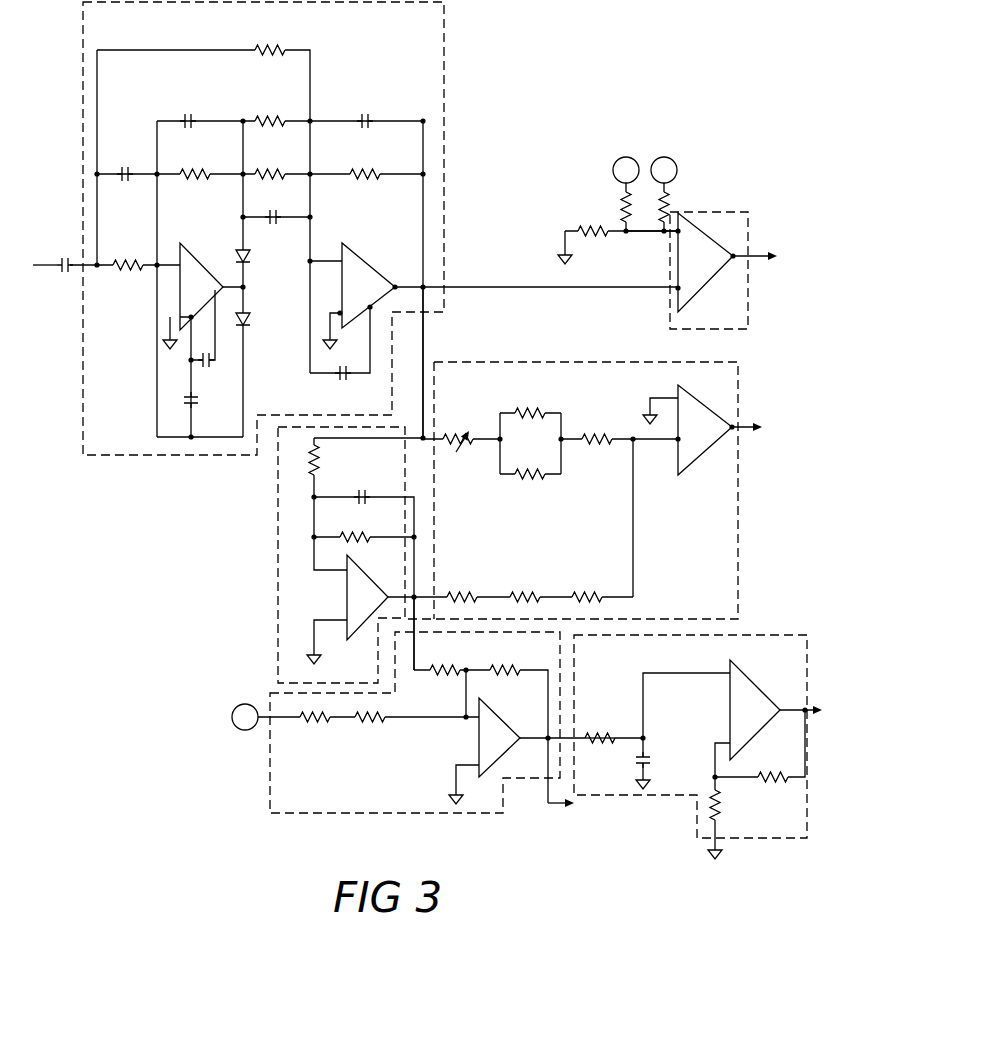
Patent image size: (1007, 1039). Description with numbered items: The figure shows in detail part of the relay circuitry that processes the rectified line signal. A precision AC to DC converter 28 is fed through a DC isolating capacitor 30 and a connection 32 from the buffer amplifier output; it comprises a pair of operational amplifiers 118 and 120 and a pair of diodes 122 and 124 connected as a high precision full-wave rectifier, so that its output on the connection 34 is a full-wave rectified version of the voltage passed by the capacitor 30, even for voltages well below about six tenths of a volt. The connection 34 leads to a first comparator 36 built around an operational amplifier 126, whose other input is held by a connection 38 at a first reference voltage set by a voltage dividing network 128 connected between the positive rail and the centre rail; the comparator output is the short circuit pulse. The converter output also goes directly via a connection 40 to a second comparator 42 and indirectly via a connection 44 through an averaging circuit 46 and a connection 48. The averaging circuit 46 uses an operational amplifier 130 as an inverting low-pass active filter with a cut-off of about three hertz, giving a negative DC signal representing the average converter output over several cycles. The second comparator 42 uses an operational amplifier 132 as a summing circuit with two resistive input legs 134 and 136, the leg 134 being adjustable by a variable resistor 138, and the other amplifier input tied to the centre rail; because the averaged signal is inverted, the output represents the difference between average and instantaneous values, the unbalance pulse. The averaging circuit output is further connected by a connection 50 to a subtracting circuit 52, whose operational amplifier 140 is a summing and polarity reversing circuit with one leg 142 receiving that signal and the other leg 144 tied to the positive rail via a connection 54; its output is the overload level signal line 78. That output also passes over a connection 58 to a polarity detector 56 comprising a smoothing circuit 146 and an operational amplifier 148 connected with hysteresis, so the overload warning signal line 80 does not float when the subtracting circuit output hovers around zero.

The AC to DC converter 28 is at (284, 228).
The DC isolating capacitor 30 is at (70, 270).
The connection 32 is at (55, 260).
The connection 34 is at (499, 285).
The first comparator 36 is at (683, 255).
The connection 38 is at (676, 234).
The connection 40 is at (438, 444).
The second comparator 42 is at (610, 490).
The connection 44 is at (423, 440).
The averaging circuit 46 is at (331, 485).
The connection 48 is at (424, 592).
The connection 50 is at (422, 630).
The subtracting circuit 52 is at (435, 728).
The connection 54 is at (248, 731).
The polarity detector 56 is at (727, 727).
The connection 58 is at (572, 738).
The overload level signal line 78 is at (558, 812).
The overload warning signal line 80 is at (808, 706).
The operational amplifier 118 is at (208, 266).
The operational amplifier 120 is at (370, 272).
The diode 122 is at (249, 320).
The diode 124 is at (248, 255).
The operational amplifier 126 is at (715, 250).
The voltage dividing network 128 is at (606, 187).
The operational amplifier 130 is at (348, 598).
The operational amplifier 132 is at (706, 445).
The resistive input leg 134 is at (556, 483).
The resistive input leg 136 is at (535, 565).
The variable resistor 138 is at (462, 454).
The operational amplifier 140 is at (480, 740).
The leg 142 is at (447, 686).
The leg 144 is at (357, 758).
The smoothing circuit 146 is at (634, 730).
The operational amplifier 148 is at (734, 708).